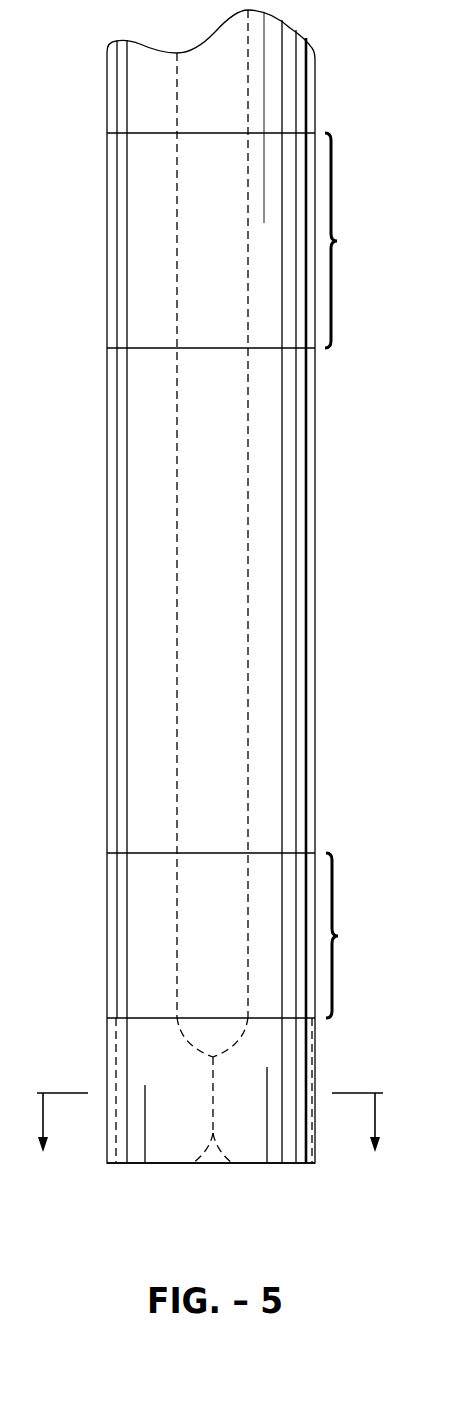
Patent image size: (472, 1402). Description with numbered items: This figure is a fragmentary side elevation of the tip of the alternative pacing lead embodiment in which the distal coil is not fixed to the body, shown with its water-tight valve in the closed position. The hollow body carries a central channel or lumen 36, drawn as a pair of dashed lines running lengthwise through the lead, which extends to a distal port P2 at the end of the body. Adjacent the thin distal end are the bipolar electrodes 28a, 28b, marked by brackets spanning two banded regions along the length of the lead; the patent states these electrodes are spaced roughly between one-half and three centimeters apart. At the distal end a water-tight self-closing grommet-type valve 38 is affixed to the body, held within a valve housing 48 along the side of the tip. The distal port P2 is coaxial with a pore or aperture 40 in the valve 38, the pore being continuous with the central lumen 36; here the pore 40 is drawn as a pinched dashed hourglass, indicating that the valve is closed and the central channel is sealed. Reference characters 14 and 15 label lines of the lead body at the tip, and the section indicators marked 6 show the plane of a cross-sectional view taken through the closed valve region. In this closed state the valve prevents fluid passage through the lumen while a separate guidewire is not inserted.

The tubular body 14 is at (143, 930).
The wall portion 15 is at (136, 267).
The central lumen 36 is at (247, 443).
The valve housing 48 is at (315, 1060).
The bipolar electrode 28a is at (247, 240).
The bipolar electrode 28b is at (250, 935).
The distal port P2 is at (196, 1028).
The pore 40 is at (199, 1173).
The water-tight self-closing grommet-type valve 38 is at (258, 1163).
The section line 6- 6 is at (211, 1140).